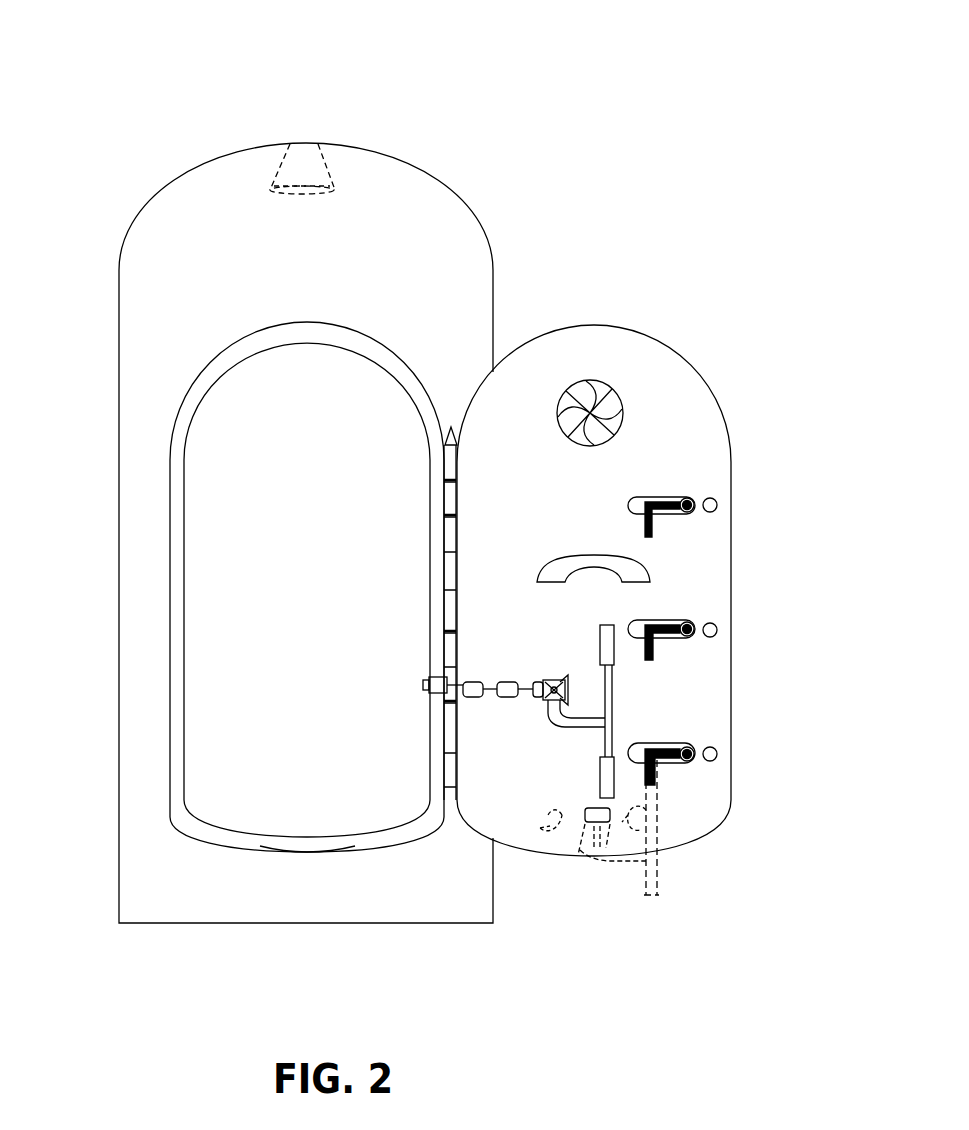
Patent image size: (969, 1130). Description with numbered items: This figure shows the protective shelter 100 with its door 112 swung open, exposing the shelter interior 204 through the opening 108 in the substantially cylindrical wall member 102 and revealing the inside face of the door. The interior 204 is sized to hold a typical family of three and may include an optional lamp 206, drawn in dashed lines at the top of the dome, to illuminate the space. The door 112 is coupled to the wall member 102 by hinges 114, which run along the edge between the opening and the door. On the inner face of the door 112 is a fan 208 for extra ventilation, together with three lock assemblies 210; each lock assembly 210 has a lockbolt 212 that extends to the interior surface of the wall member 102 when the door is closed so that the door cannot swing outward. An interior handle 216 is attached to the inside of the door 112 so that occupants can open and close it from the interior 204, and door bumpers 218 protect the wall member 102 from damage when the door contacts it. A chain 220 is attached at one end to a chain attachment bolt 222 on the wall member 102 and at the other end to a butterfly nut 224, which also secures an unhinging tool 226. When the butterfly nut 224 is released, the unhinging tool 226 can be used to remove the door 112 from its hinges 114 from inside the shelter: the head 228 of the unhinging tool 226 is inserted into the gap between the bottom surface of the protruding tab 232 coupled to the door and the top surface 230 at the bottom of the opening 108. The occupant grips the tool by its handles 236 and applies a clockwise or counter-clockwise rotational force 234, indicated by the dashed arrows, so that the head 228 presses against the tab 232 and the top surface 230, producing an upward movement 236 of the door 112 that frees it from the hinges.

The protective shelter 100 is at (257, 86).
The wall member 102 is at (119, 710).
The opening 108 is at (212, 395).
The door 112 is at (712, 712).
The hinges 114 is at (450, 500).
The shelter interior 204 is at (224, 582).
The lamp 206 is at (346, 131).
The fan 208 is at (590, 380).
The lock assemblies 210 is at (694, 476).
The lockbolt 212 is at (692, 512).
The interior handle 216 is at (690, 571).
The door bumpers 218 is at (714, 756).
The chain 220 is at (483, 683).
The chain attachment bolt 222 is at (424, 686).
The butterfly nut 224 is at (556, 682).
The unhinging tool 226 is at (610, 705).
The head 228 is at (582, 855).
The top surface 230 is at (302, 838).
The protruding tab 232 is at (597, 808).
The rotational force 234 is at (540, 815).
The handles 236 is at (447, 444).